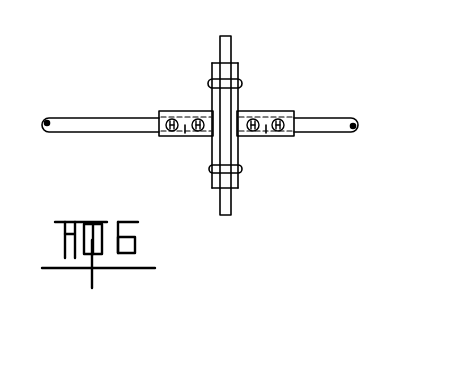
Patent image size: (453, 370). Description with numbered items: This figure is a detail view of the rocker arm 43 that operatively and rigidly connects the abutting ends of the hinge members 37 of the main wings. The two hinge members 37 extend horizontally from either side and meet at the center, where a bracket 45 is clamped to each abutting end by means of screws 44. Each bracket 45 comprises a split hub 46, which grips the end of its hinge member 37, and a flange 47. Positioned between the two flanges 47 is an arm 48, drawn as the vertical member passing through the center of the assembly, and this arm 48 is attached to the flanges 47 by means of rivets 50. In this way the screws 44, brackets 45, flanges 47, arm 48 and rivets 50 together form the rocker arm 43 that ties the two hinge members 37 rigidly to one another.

The hinge member 37 is at (93, 124).
The rocker arm 43 is at (240, 188).
The screw 44 is at (181, 111).
The bracket 45 is at (239, 108).
The split hub 46 is at (164, 137).
The flange 47 is at (239, 158).
The arm 48 is at (224, 52).
The rivet 50 is at (210, 83).